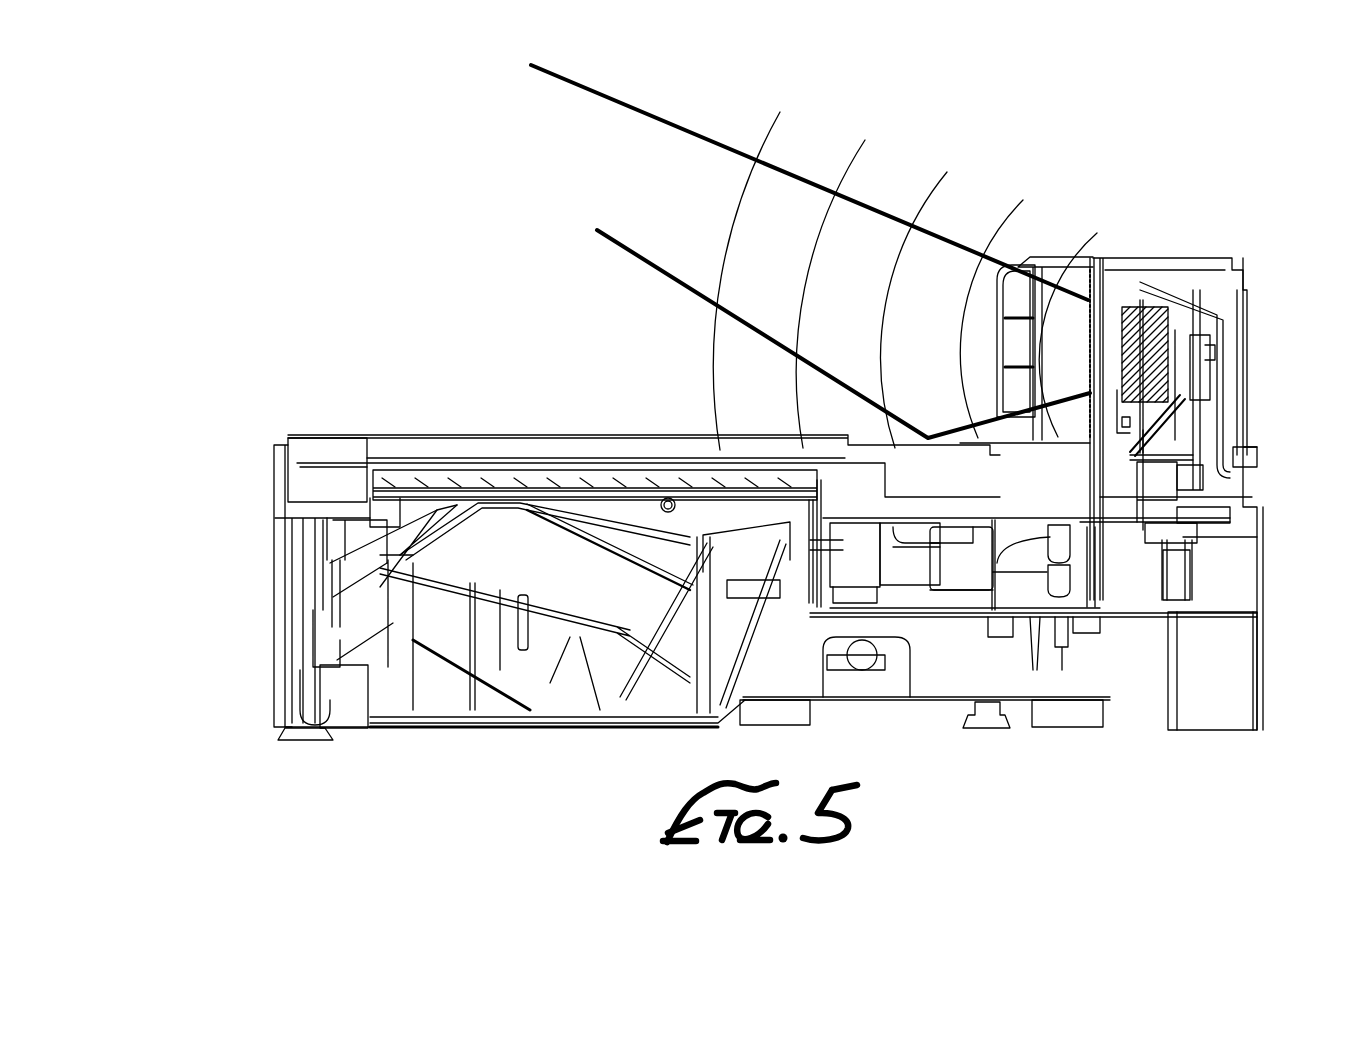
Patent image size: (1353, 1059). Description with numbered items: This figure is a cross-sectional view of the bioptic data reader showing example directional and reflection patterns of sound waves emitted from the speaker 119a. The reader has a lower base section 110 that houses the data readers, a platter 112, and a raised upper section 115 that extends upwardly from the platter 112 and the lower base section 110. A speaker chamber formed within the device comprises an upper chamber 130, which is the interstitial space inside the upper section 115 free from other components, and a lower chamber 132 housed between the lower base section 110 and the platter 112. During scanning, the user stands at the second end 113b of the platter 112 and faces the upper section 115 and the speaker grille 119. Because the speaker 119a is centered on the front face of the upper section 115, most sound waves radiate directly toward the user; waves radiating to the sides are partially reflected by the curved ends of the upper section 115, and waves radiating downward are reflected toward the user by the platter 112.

The lower base section 110 is at (313, 468).
The platter 112 is at (455, 438).
The second end 113b is at (275, 455).
The upper section 115 is at (1125, 255).
The speaker grille 119 is at (1040, 265).
The speaker 119a is at (1155, 327).
The upper chamber 130 is at (1180, 382).
The lower chamber 132 is at (598, 502).